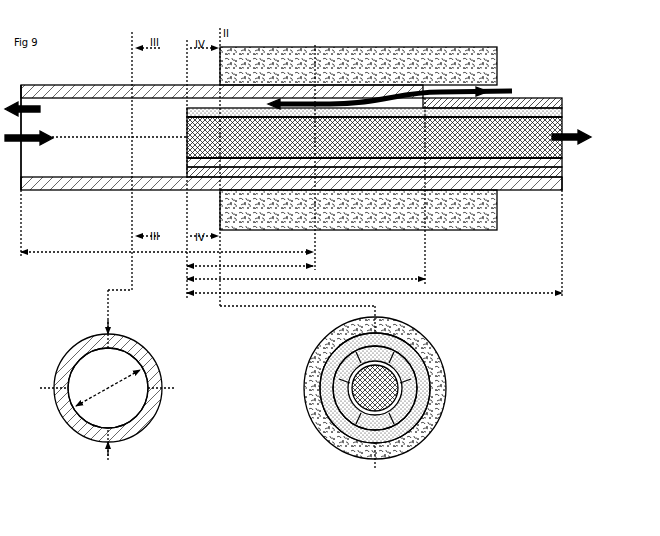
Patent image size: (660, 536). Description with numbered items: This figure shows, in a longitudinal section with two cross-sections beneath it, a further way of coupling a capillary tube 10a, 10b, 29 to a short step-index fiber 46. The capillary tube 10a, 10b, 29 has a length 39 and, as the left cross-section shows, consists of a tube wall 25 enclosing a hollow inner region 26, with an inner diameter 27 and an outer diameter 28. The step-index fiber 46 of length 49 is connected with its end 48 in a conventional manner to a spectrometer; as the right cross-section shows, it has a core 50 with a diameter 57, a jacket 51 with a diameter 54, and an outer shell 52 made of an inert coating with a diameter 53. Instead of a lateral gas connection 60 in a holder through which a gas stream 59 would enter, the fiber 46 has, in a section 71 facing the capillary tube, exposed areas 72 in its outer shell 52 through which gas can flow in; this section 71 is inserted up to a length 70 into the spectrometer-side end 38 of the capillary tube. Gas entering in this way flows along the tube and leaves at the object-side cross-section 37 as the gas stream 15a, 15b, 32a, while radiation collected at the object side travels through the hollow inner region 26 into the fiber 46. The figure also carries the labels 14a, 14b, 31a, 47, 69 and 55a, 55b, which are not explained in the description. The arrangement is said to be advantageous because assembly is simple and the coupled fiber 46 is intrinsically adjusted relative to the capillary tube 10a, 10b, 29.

The capillary tube 10a is at (37, 88).
The capillary tube 10b is at (291, 130).
The capillary tube 29 is at (291, 130).
The gas stream 15a is at (40, 117).
The gas stream 15b is at (65, 113).
The gas stream 32a is at (65, 113).
The supply flow 14a is at (30, 131).
The supply flow 14b is at (65, 134).
The supply flow path 31a is at (65, 134).
The object-side cross-section 37 is at (26, 164).
The core layer 47 is at (187, 151).
The spectrometer-side end 38 is at (358, 131).
The foam insulation 69 is at (316, 84).
The lateral gas connection 60 is at (401, 86).
The gas stream 59 is at (498, 84).
The step-index fiber 46 is at (528, 100).
The fiber end 48 is at (566, 108).
The outlet flow 55a is at (572, 132).
The outlet flow 55b is at (589, 129).
The core 50 is at (566, 160).
The jacket 51 is at (566, 172).
The outer shell 52 is at (566, 186).
The length 39 is at (167, 259).
The length 70 is at (250, 272).
The section 71 is at (306, 284).
The length 49 is at (374, 297).
The tube wall 25 is at (140, 342).
The hollow inner region 26 is at (136, 352).
The inner diameter 27 is at (162, 386).
The outer diameter 28 is at (104, 452).
The core diameter 57 is at (318, 364).
The jacket diameter 54 is at (334, 387).
The outer shell diameter 53 is at (322, 418).
The exposed areas 72 is at (430, 396).